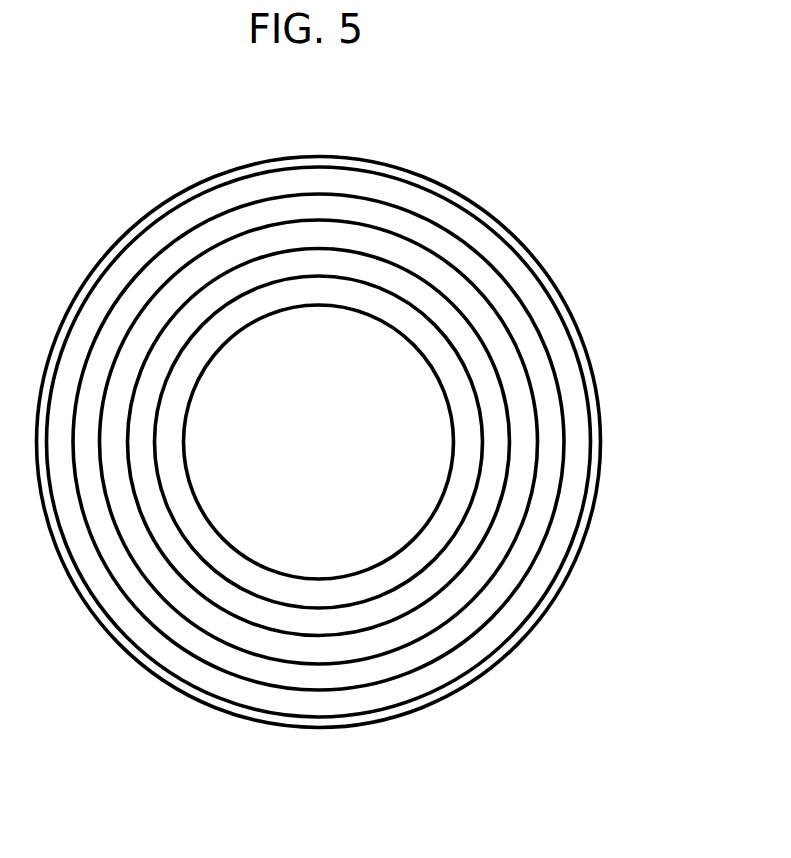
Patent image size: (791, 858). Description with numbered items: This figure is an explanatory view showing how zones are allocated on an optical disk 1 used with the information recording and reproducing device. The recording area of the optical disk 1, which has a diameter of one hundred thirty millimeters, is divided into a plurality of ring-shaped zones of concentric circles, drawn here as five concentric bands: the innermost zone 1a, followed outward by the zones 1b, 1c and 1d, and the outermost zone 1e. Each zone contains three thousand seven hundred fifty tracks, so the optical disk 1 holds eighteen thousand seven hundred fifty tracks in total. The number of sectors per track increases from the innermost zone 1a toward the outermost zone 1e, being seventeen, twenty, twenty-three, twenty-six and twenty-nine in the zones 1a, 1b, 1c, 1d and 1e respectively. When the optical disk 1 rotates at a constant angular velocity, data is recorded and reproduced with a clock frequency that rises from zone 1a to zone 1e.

The optical disk 1 is at (400, 169).
The innermost zone 1a is at (342, 381).
The second zone 1b is at (350, 417).
The third zone 1c is at (349, 442).
The fourth zone 1d is at (358, 442).
The outermost zone 1e is at (498, 306).